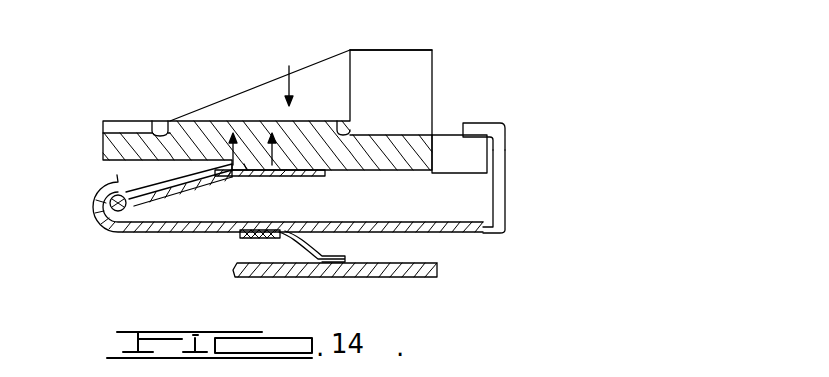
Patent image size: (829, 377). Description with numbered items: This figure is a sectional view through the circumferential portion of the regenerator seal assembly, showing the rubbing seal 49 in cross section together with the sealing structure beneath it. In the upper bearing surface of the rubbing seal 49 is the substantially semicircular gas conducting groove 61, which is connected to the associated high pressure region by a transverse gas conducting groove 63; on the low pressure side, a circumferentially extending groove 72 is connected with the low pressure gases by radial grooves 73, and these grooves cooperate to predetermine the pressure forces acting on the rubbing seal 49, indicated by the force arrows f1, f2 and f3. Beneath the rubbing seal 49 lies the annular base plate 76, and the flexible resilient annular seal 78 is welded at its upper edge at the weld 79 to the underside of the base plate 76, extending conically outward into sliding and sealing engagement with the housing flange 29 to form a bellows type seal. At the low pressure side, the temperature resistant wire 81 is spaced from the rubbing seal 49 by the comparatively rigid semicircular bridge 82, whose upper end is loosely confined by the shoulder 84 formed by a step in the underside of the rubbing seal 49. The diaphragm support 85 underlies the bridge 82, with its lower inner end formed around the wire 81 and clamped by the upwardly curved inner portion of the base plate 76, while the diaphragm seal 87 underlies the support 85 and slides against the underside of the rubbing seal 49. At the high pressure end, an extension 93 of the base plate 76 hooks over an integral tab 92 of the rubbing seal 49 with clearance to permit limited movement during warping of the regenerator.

The housing flange 29 is at (293, 277).
The rubbing seal 49 is at (420, 156).
The gas conducting groove 61 is at (343, 130).
The transverse gas conducting groove 63 is at (381, 128).
The circumferentially extending groove 72 is at (160, 128).
The radial groove 73 is at (124, 132).
The annular base plate 76 is at (278, 237).
The annular seal 78 is at (302, 247).
The weld 79 is at (243, 235).
The temperature resistant wire 81 is at (113, 199).
The semicircular bridge 82 is at (134, 193).
The shoulder 84 is at (247, 168).
The diaphragm support 85 is at (223, 185).
The diaphragm seal 87 is at (270, 177).
The integral tab 92 is at (443, 140).
The hooked extension 93 is at (480, 125).
The force arrow f1 is at (229, 148).
The force arrow f2 is at (275, 152).
The force arrow f3 is at (290, 84).